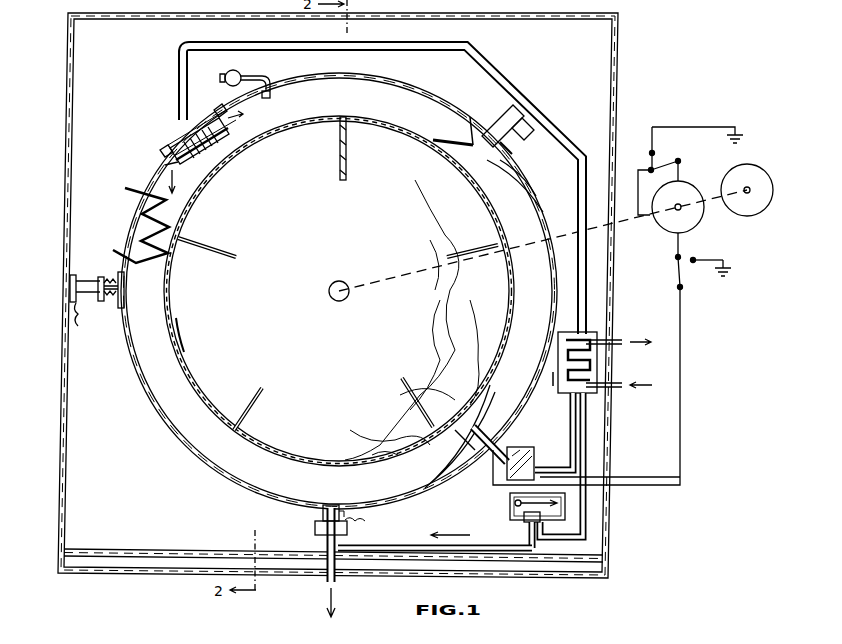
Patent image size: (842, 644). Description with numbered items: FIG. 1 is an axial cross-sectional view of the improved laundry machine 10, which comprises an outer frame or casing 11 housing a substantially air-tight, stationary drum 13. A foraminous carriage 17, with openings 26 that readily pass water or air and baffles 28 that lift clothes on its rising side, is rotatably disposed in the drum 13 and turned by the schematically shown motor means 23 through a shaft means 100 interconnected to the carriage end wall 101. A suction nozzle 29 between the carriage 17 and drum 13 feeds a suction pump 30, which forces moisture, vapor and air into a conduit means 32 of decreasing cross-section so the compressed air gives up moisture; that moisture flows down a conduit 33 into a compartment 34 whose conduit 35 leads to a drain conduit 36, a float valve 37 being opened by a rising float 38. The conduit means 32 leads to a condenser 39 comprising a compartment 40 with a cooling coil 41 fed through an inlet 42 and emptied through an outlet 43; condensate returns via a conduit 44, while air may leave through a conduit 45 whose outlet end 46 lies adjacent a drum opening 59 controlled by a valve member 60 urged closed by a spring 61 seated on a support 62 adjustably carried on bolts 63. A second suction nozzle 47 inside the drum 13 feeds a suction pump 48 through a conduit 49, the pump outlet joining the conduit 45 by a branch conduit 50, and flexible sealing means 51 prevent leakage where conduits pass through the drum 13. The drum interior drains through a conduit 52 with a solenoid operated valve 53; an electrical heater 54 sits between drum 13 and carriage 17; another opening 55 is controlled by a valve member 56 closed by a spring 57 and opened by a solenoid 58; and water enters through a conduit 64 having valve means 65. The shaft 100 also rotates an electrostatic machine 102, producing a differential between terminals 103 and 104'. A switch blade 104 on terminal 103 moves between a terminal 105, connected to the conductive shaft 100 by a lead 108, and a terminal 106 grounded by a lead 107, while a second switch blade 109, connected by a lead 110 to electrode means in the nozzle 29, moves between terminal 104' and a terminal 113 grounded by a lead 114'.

The laundry machine 10 is at (635, 59).
The outer frame or casing 11 is at (66, 520).
The stationary drum 13 is at (186, 453).
The foraminous carriage 17 is at (200, 392).
The motor means 23 is at (746, 163).
The openings 26 is at (184, 348).
The baffles 28 is at (226, 250).
The suction nozzle 29 is at (436, 452).
The suction pump 30 is at (520, 450).
The conduit means 32 is at (545, 468).
The conduit 33 is at (610, 477).
The compartment 34 is at (510, 510).
The conduit 35 is at (394, 545).
The drain conduit 36 is at (342, 565).
The float valve 37 is at (528, 522).
The float 38 is at (514, 500).
The condenser 39 is at (600, 332).
The compartment 40 is at (556, 380).
The cooling coil 41 is at (598, 356).
The inlet 42 is at (624, 388).
The outlet 43 is at (624, 340).
The conduit 44 is at (590, 448).
The conduit 45 is at (504, 78).
The outlet end 46 is at (178, 84).
The suction nozzle 47 is at (455, 138).
The suction pump 48 is at (500, 112).
The conduit 49 is at (512, 143).
The branch conduit 50 is at (530, 118).
The flexible sealing means 51 is at (522, 178).
The conduit 52 is at (332, 504).
The solenoid operated valve 53 is at (315, 527).
The electrical heater 54 is at (152, 264).
The opening 55 is at (125, 292).
The valve member 56 is at (108, 272).
The spring 57 is at (101, 300).
The solenoid 58 is at (90, 282).
The opening 59 is at (186, 130).
The valve member 60 is at (202, 120).
The spring 61 is at (228, 150).
The support 62 is at (210, 170).
The bolts 63 is at (160, 152).
The conduit 64 is at (268, 76).
The valve means 65 is at (240, 73).
The shaft means 100 is at (343, 282).
The end wall 101 is at (380, 138).
The electrostatic machine 102 is at (664, 239).
The terminal 103 is at (682, 161).
The switch blade 104 is at (675, 150).
The terminal 104' is at (661, 260).
The terminal 105 is at (636, 204).
The terminal 106 is at (648, 152).
The lead 107 is at (712, 126).
The lead 108 is at (637, 163).
The switch blade 109 is at (690, 288).
The lead 110 is at (682, 366).
The terminal 113 is at (704, 258).
The lead 114' is at (744, 256).